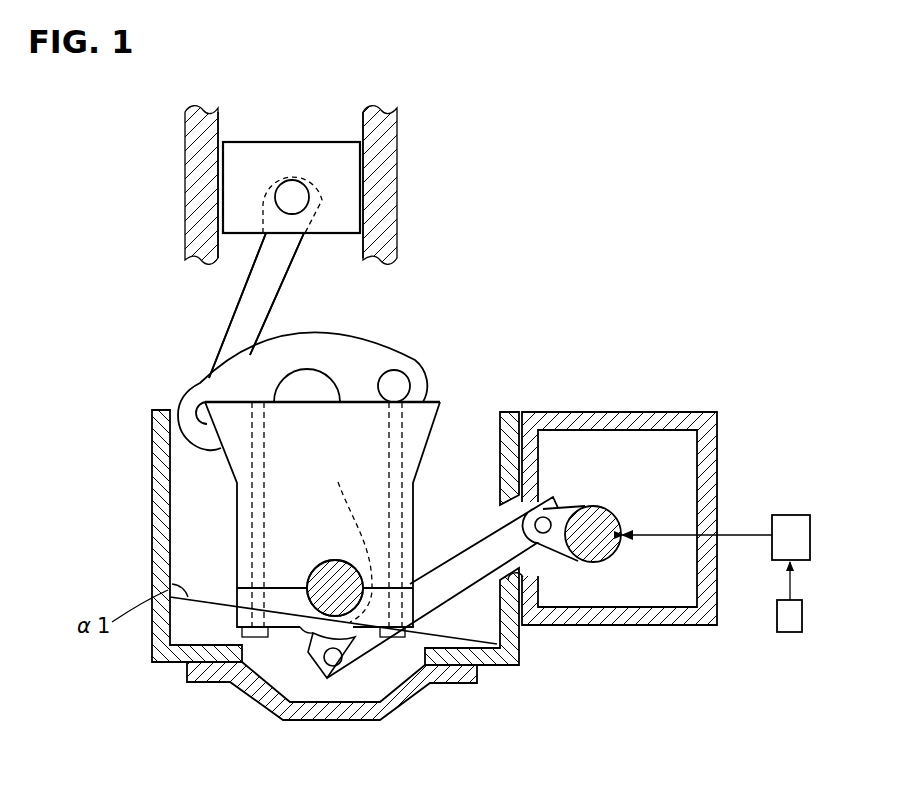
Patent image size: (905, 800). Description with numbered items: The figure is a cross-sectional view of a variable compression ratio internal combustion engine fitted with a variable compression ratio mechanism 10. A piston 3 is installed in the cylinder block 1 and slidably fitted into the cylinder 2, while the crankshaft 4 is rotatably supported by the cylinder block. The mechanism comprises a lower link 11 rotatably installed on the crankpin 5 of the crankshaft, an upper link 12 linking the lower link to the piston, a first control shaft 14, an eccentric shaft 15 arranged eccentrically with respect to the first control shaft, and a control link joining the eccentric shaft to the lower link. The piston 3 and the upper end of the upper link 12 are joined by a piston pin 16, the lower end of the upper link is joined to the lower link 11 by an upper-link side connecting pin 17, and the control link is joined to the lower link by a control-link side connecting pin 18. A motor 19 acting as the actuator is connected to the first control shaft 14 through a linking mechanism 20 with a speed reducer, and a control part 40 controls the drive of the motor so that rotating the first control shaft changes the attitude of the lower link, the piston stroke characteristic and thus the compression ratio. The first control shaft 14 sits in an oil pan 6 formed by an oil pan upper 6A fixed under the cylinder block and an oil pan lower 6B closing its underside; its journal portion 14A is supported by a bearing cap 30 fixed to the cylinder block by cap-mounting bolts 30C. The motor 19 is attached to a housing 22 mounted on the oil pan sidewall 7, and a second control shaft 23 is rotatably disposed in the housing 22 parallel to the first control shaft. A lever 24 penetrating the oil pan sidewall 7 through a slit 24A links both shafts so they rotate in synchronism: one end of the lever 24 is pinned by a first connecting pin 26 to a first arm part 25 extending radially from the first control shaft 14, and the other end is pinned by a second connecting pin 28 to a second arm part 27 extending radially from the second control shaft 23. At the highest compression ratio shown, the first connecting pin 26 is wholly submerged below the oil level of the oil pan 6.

The cylinder block 1 is at (373, 156).
The cylinder 2 is at (363, 126).
The piston 3 is at (258, 150).
The crankshaft 4 is at (295, 384).
The crankpin 5 is at (307, 385).
The piston pin 16 is at (291, 192).
The upper link 12 is at (272, 272).
The variable compression ratio mechanism 10 is at (376, 320).
The lower link 11 is at (388, 360).
The upper-link side connecting pin 17 is at (200, 408).
The control-link side connecting pin 18 is at (410, 385).
The oil pan 6 is at (296, 569).
The oil pan upper 6A is at (160, 552).
The oil pan lower 6B is at (307, 714).
The oil pan sidewall 7 is at (509, 424).
The bearing cap 30 is at (268, 575).
The cap-mounting bolts 30C is at (258, 640).
The first control shaft 14 is at (328, 576).
The journal portion 14A is at (308, 586).
The eccentric shaft 15 is at (345, 512).
The lever 24 is at (444, 588).
The slit 24A is at (517, 582).
The first arm part 25 is at (347, 640).
The first connecting pin 26 is at (333, 660).
The second arm part 27 is at (562, 513).
The second connecting pin 28 is at (543, 518).
The housing 22 is at (676, 412).
The second control shaft 23 is at (600, 545).
The linking mechanism 20 is at (644, 506).
The motor 19 is at (800, 515).
The control part 40 is at (792, 632).